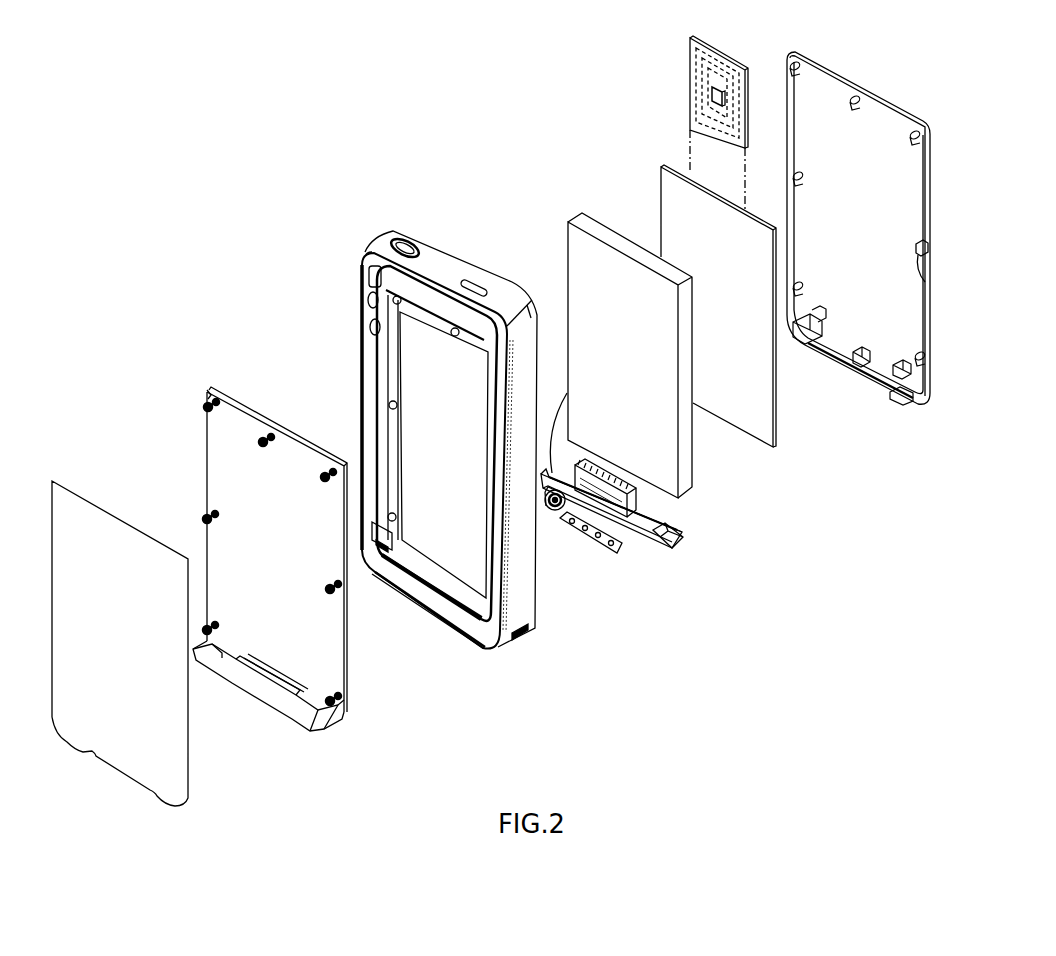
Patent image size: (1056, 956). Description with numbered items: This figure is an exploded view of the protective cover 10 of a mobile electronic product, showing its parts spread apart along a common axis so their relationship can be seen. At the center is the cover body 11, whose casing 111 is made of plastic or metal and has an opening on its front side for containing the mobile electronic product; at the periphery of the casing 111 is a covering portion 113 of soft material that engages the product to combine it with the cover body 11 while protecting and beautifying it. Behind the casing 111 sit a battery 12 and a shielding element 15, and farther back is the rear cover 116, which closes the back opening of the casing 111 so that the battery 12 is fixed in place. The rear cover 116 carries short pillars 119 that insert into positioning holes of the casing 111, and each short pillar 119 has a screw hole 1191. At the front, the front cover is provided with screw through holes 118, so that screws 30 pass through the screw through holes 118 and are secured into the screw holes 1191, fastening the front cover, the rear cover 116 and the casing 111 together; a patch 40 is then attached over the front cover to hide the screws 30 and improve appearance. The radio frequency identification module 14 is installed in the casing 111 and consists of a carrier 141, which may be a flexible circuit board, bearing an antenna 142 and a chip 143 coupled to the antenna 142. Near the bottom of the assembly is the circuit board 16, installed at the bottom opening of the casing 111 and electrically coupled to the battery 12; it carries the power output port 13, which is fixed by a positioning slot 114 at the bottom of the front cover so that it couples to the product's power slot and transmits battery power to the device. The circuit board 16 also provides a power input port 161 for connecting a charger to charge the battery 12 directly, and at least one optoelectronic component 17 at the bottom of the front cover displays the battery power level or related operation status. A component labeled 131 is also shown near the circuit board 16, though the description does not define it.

The protective cover 10 is at (906, 211).
The cover body 11 is at (352, 333).
The casing 111 is at (363, 262).
The covering portion 113 is at (428, 602).
The positioning slot 114 is at (263, 695).
The rear cover 116 is at (900, 187).
The screw through holes 118 is at (207, 392).
The short pillars 119 is at (930, 247).
The screw hole 1191 is at (928, 287).
The battery 12 is at (582, 250).
The power output port 13 is at (585, 556).
The camera module 131 is at (544, 511).
The radio frequency identification (RFID) module 14 is at (649, 123).
The carrier 141 is at (697, 55).
The antenna 142 is at (712, 88).
The chip 143 is at (717, 107).
The shielding element 15 is at (470, 438).
The circuit board 16 is at (653, 541).
The power input port 161 is at (677, 543).
The optoelectronic component 17 is at (587, 540).
The screws 30 is at (204, 407).
The patch 40 is at (162, 759).